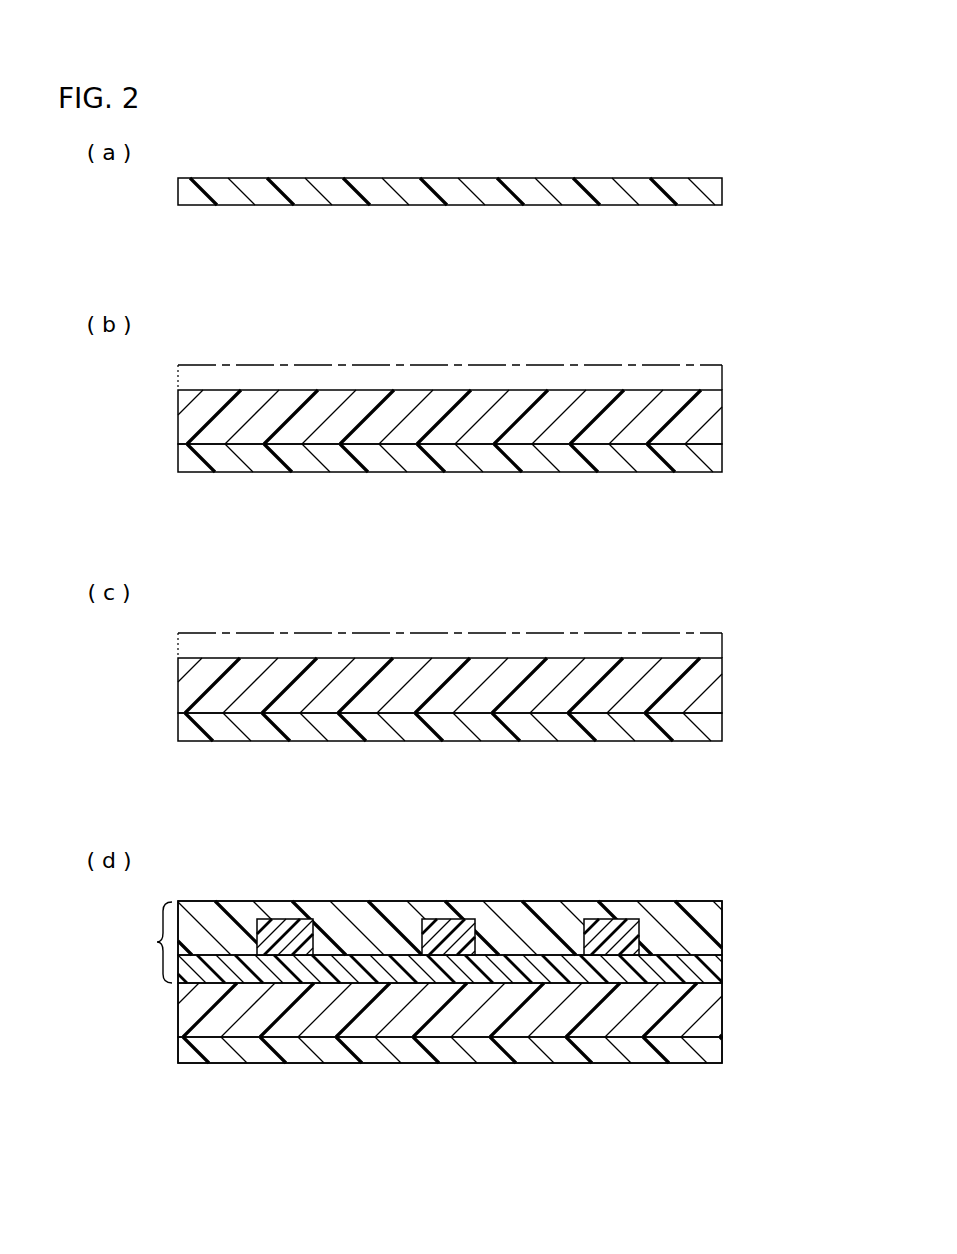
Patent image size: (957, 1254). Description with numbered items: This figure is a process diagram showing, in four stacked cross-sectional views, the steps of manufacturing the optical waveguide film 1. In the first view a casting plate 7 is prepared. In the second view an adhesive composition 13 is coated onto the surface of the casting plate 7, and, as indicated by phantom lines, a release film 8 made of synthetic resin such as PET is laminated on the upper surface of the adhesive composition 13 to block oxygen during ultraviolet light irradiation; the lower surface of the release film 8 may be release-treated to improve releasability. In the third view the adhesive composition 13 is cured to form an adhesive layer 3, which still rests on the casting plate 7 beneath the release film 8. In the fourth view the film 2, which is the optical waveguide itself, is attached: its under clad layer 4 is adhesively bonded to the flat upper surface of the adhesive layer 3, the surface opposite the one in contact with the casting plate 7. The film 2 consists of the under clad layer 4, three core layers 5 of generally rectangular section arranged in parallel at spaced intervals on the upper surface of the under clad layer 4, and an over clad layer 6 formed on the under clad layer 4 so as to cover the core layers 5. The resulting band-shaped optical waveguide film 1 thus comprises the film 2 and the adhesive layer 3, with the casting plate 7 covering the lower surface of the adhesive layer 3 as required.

The optical waveguide film 1 is at (458, 1143).
The film 2 is at (151, 942).
The adhesive layer 3 is at (724, 692).
The under clad layer 4 is at (724, 965).
The core layer 5 is at (288, 919).
The over clad layer 6 is at (724, 921).
The casting plate 7 is at (724, 191).
The release film 8 is at (724, 380).
The adhesive composition 13 is at (724, 423).